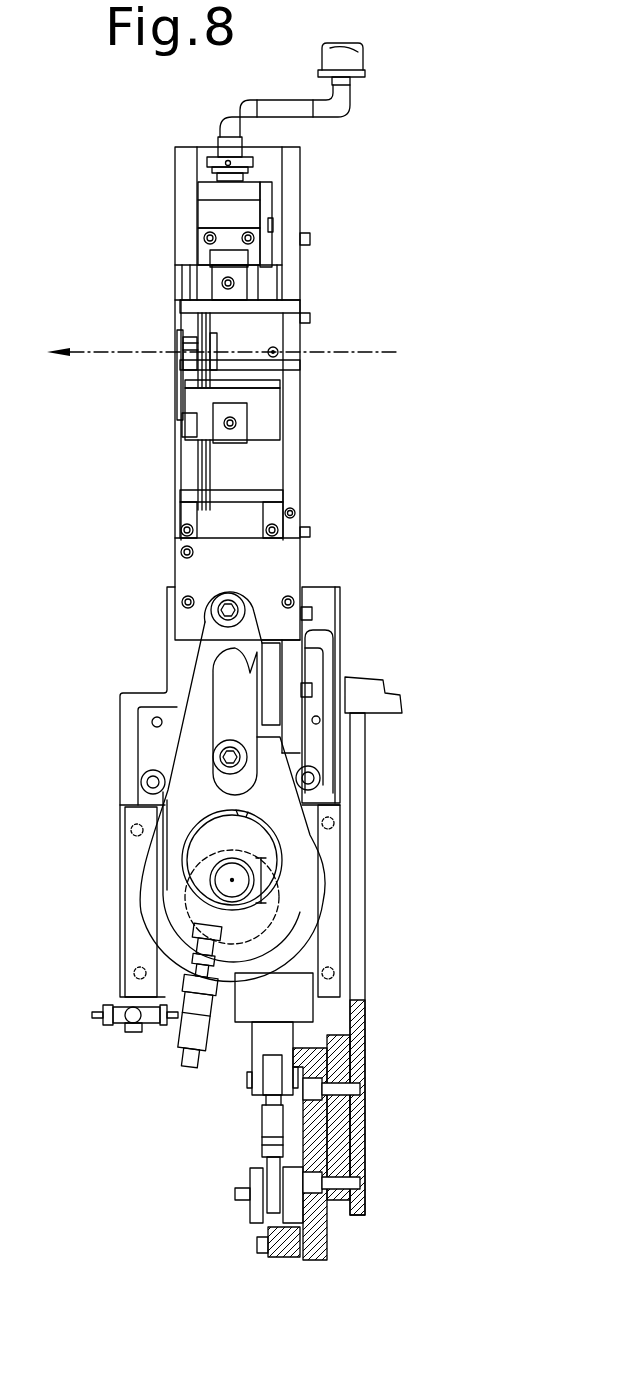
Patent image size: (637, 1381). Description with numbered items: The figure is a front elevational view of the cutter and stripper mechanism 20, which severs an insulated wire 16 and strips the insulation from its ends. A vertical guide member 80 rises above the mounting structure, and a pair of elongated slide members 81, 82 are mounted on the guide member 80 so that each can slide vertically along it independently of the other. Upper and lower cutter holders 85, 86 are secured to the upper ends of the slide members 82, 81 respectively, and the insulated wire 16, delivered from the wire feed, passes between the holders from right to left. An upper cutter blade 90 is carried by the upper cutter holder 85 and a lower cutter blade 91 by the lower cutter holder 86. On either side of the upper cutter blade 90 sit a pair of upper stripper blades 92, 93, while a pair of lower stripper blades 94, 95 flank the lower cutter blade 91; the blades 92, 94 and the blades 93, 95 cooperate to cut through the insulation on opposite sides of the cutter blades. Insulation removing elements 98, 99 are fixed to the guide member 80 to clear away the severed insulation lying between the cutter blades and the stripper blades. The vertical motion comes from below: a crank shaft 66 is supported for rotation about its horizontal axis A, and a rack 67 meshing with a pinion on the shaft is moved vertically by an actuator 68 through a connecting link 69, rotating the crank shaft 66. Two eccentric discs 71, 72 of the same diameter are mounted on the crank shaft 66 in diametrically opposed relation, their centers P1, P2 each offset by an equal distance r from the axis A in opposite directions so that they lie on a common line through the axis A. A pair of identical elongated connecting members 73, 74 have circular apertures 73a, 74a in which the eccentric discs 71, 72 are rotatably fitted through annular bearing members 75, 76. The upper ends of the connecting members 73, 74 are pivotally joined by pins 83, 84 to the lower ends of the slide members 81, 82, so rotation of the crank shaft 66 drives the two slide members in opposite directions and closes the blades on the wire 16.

The cutter and stripper mechanism 20 is at (344, 229).
The insulated wire 16 is at (367, 350).
The vertical guide member 80 is at (180, 218).
The slide member 81 is at (250, 477).
The slide member 82 is at (252, 208).
The pin 83 is at (232, 610).
The pin 84 is at (232, 757).
The upper cutter holder 85 is at (203, 275).
The lower cutter holder 86 is at (197, 423).
The upper cutter blade 90 is at (183, 347).
The lower cutter blade 91 is at (217, 381).
The upper stripper blade 92 is at (177, 323).
The upper stripper blade 93 is at (208, 322).
The lower stripper blade 94 is at (180, 367).
The lower stripper blade 95 is at (217, 362).
The insulation removing element 98 is at (180, 350).
The insulation removing element 99 is at (197, 461).
The eccentric disc 71 is at (192, 850).
The eccentric disc 72 is at (197, 937).
The connecting member 73 is at (273, 748).
The circular aperture 73a is at (243, 813).
The connecting member 74 is at (298, 908).
The circular aperture 74a is at (240, 953).
The annular bearing member 75 is at (185, 865).
The crank shaft 66 is at (222, 888).
The annular bearing member 76 is at (195, 925).
The rack 67 is at (258, 1042).
The actuator 68 is at (240, 1215).
The connecting link 69 is at (270, 1122).
The center of eccentric disc P1 is at (232, 855).
The center of eccentric disc P2 is at (232, 907).
The axis of crank shaft A is at (232, 874).
The offset distance r is at (262, 858).